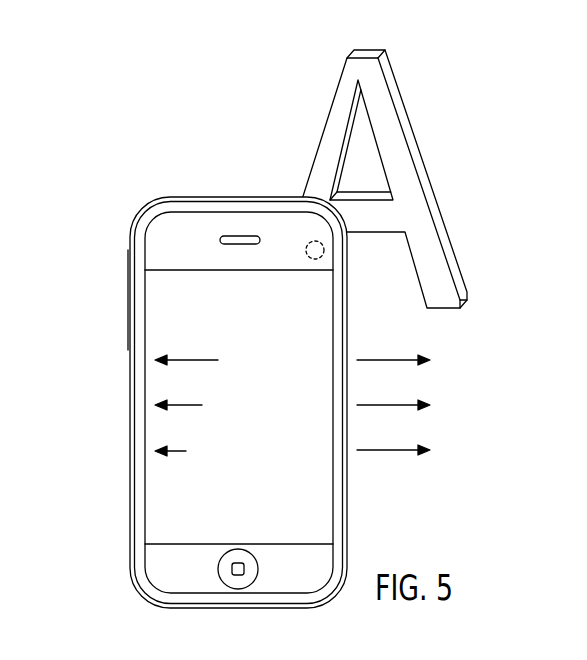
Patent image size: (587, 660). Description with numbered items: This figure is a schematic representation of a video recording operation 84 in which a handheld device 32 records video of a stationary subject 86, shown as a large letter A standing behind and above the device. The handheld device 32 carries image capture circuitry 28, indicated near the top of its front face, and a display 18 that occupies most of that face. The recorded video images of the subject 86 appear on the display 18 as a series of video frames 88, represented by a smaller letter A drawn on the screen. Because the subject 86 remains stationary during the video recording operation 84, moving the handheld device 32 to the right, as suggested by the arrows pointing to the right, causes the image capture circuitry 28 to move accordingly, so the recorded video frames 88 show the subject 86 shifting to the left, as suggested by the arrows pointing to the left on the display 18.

The video recording operation 84 is at (195, 61).
The subject 86 is at (333, 99).
The handheld device 32 is at (166, 189).
The display 18 is at (333, 323).
The video frames 88 is at (198, 310).
The image capture circuitry 28 is at (307, 243).